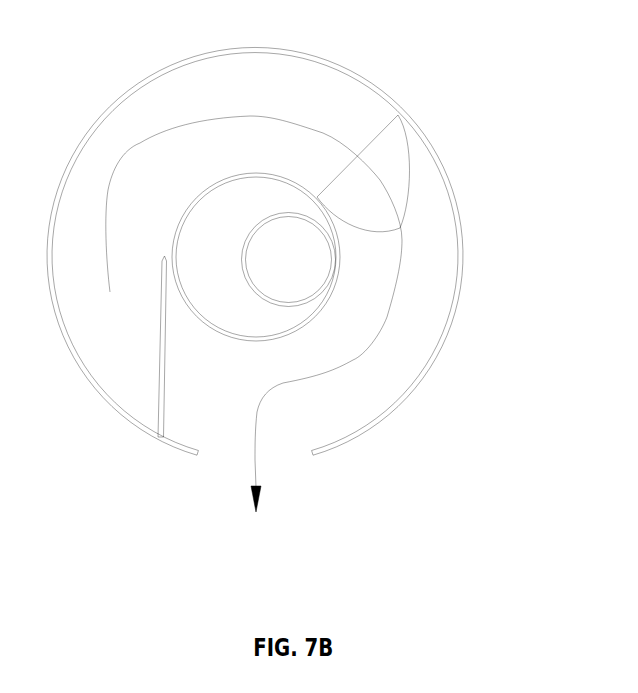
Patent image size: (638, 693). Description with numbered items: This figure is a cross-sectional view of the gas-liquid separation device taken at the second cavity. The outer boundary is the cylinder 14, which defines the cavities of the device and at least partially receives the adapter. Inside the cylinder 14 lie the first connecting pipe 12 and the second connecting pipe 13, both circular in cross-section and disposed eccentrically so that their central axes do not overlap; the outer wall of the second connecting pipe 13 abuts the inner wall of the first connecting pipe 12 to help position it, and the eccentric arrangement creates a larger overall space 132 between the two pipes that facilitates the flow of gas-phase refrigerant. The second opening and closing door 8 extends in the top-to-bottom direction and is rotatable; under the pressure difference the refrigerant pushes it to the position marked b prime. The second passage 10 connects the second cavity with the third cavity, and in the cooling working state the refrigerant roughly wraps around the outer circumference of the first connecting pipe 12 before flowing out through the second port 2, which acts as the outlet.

The second port 2 is at (282, 467).
The second opening and closing door 8 is at (158, 373).
The second passage 10 is at (393, 175).
The first connecting pipe 12 is at (260, 173).
The second connecting pipe 13 is at (336, 247).
The cylinder 14 is at (450, 333).
The overall space 132 is at (212, 218).